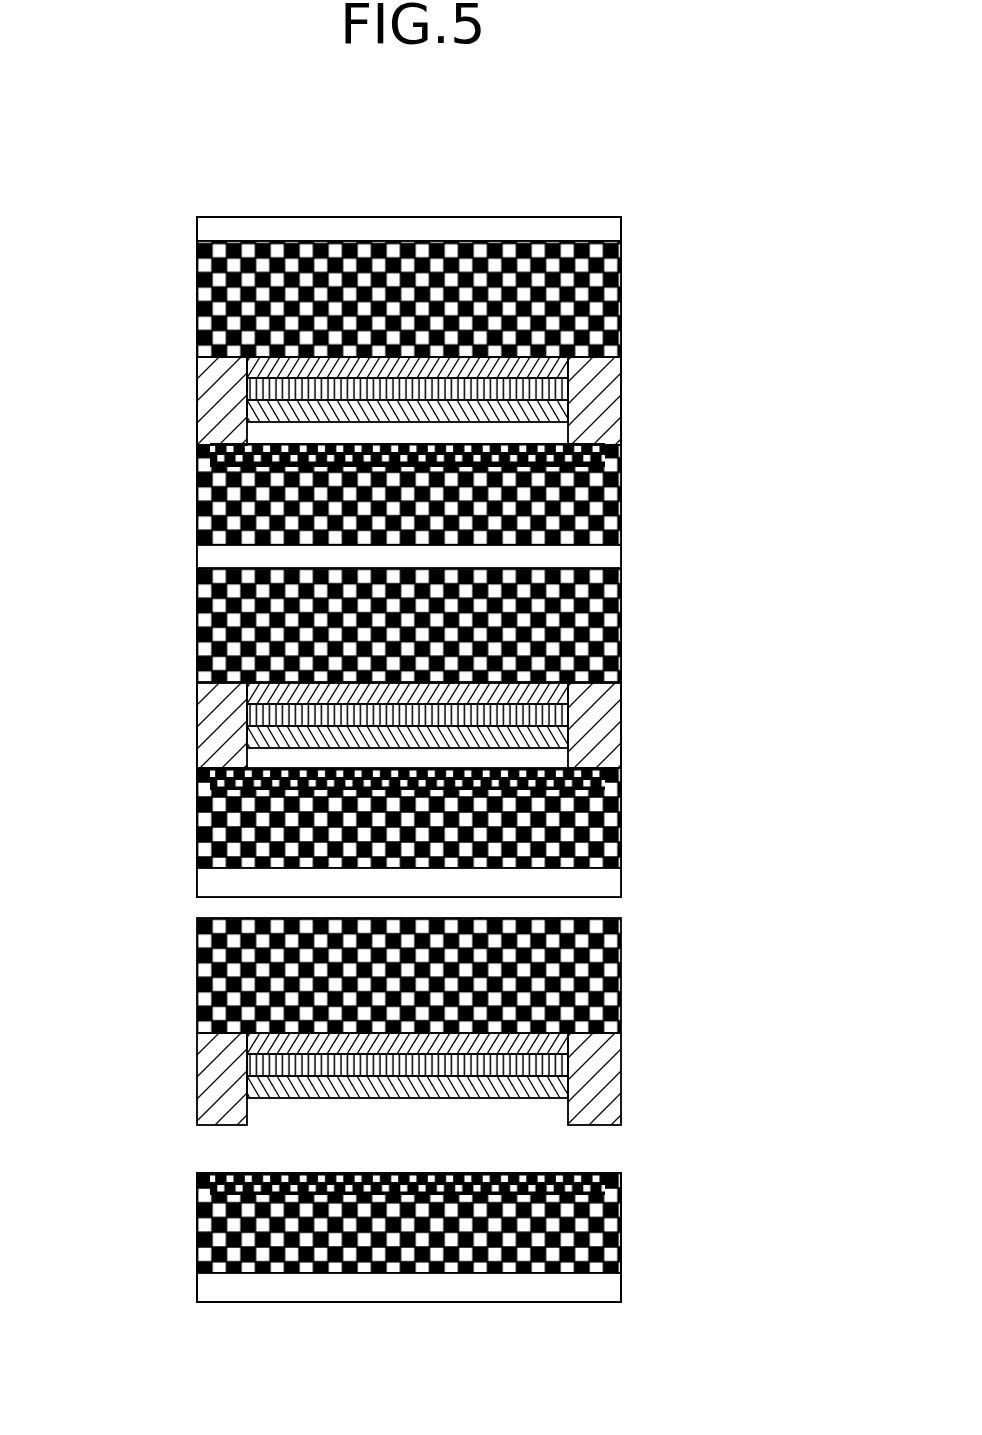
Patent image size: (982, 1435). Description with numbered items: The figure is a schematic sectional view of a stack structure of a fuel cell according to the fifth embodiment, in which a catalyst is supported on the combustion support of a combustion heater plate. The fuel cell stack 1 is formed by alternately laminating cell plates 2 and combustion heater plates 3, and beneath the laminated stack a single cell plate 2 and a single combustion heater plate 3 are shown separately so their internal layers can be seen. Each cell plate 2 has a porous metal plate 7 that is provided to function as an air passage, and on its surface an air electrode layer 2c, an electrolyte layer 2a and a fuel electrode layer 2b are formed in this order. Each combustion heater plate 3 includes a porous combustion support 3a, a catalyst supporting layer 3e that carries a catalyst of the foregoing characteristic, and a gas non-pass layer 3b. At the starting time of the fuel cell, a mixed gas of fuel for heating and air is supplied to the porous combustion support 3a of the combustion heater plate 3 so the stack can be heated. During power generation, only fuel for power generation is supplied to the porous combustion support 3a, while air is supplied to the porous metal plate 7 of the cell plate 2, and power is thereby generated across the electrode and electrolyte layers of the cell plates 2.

The fuel cell stack 1 is at (534, 173).
The cell plate 2 is at (743, 248).
The electrolyte layer 2a is at (560, 390).
The fuel electrode layer 2b is at (560, 410).
The air electrode layer 2c is at (560, 368).
The combustion heater plate 3 is at (627, 446).
The porous combustion support 3a is at (609, 821).
The gas non-pass layer 3b is at (622, 877).
The catalyst supporting layer 3e is at (622, 781).
The porous metal plate 7 is at (621, 300).